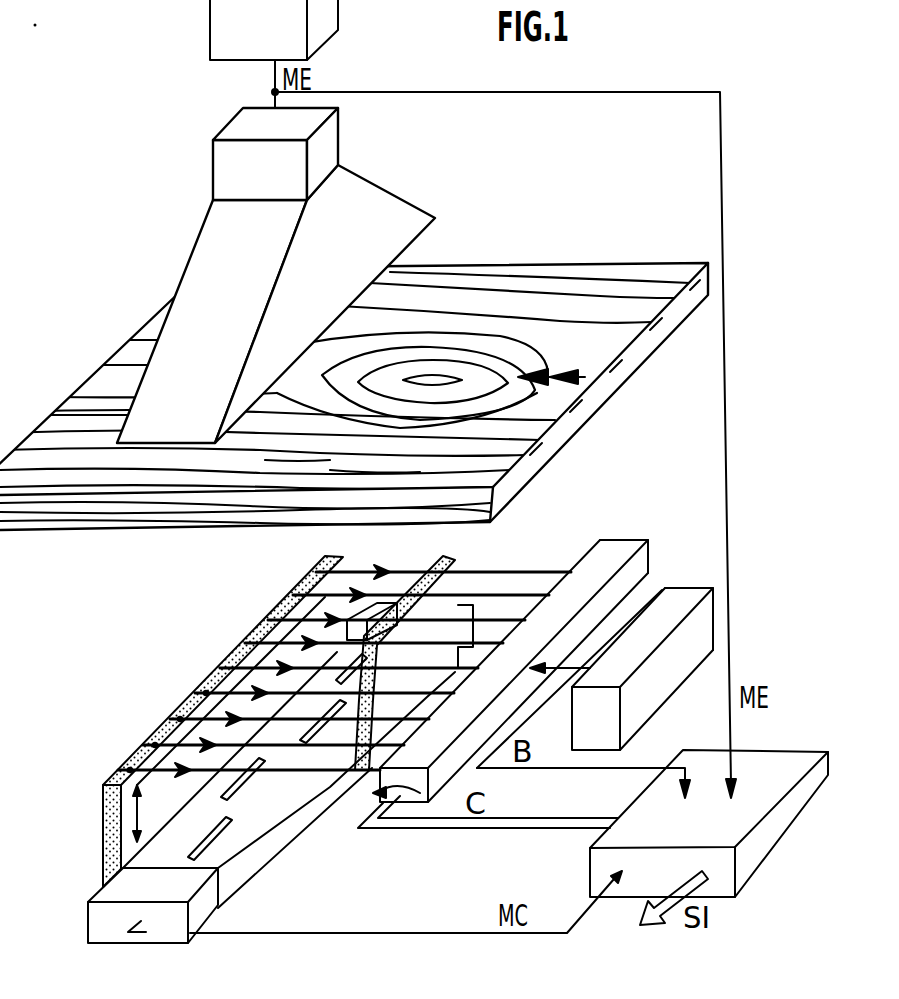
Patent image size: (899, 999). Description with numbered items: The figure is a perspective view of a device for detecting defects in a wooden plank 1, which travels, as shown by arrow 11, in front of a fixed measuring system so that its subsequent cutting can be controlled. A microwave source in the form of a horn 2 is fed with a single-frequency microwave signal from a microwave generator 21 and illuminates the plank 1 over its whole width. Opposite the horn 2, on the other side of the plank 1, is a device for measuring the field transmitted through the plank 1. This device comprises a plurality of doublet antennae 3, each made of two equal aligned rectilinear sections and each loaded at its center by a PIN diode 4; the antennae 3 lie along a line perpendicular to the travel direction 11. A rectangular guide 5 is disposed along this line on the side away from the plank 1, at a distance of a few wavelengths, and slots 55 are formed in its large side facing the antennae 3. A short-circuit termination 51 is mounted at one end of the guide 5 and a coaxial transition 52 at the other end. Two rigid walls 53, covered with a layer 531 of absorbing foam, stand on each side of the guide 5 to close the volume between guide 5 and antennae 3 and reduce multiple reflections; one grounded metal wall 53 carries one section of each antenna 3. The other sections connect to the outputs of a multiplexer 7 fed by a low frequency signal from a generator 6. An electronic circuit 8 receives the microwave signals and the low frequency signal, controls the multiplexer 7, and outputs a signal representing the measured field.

The wooden plank 1 is at (88, 425).
The horn 2 is at (198, 270).
The microwave generator 21 is at (225, 28).
The arrow indicating travel direction 11 is at (564, 380).
The doublet antennae 3 is at (178, 770).
The diode 4 is at (140, 768).
The rectangular guide 5 is at (270, 835).
The termination 51 is at (403, 571).
The transition 52 is at (102, 913).
The walls 53 is at (104, 848).
The absorbing material layer 531 is at (104, 803).
The slots 55 is at (216, 834).
The generator 6 is at (653, 690).
The multiplexer 7 is at (610, 553).
The electronic circuit 8 is at (758, 772).